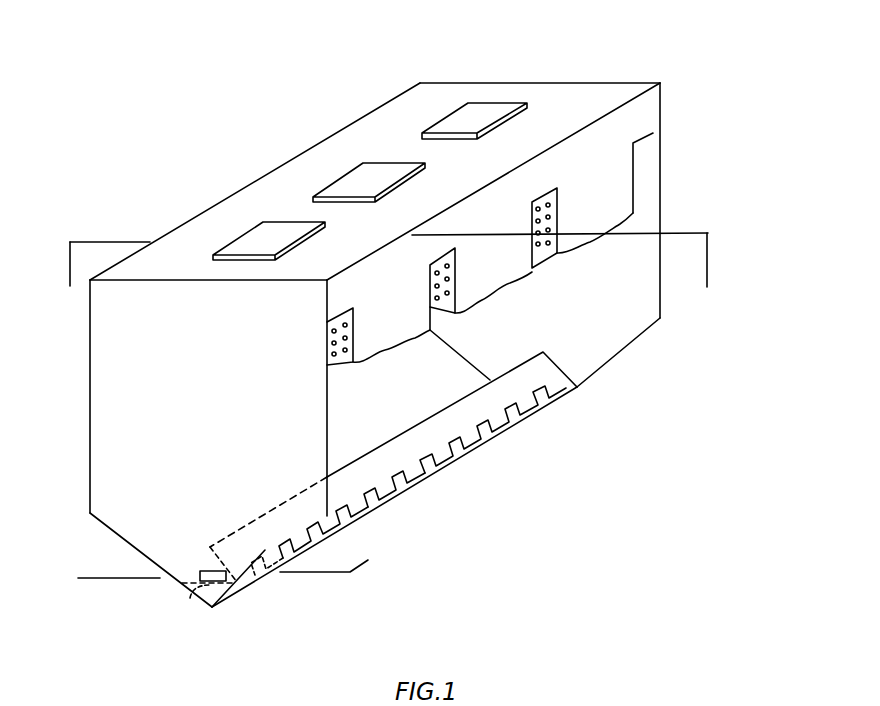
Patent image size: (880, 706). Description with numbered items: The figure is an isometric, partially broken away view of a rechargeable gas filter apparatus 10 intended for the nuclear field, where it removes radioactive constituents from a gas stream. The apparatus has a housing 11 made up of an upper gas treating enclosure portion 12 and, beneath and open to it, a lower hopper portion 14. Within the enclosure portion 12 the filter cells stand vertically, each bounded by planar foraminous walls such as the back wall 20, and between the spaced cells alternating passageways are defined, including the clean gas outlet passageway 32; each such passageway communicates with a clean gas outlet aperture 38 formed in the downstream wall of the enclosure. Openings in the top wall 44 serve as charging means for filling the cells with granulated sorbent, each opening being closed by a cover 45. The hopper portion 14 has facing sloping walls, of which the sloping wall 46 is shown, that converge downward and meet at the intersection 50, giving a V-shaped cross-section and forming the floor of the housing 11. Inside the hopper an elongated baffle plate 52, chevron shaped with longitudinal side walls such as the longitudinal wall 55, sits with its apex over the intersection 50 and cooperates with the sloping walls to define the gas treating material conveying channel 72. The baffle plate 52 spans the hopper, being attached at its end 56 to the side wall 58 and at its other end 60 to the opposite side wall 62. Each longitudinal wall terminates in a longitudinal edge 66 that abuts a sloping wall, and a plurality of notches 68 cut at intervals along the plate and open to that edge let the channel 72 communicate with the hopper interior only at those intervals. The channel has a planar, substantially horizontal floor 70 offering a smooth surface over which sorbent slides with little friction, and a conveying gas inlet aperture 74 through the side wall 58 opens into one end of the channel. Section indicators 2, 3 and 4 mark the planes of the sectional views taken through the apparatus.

The rechargeable gas filter apparatus 10 is at (255, 88).
The housing 11 is at (243, 133).
The upper gas treating enclosure portion 12 is at (86, 433).
The lower hopper portion 14 is at (145, 560).
The back wall 20 is at (347, 323).
The clean gas outlet passageway 32 is at (680, 153).
The clean gas outlet aperture 38 is at (363, 337).
The top wall 44 is at (437, 100).
The cover 45 is at (362, 175).
The sloping wall 46 is at (160, 590).
The intersection of the sloping walls 50 is at (253, 588).
The elongated baffle plate 52 is at (422, 416).
The longitudinal wall 55 is at (466, 418).
The end of the baffle plate 56 is at (197, 566).
The side wall 58 is at (140, 478).
The other end of the baffle plate 60 is at (580, 358).
The opposite side wall 62 is at (643, 212).
The longitudinal edge 66 is at (394, 496).
The notch 68 is at (468, 440).
The planar floor 70 is at (212, 607).
The gas treating material conveying channel 72 is at (389, 513).
The conveying gas inlet aperture 74 is at (213, 582).
The section line 2- 2 is at (113, 217).
The section line 3- 3 is at (386, 260).
The section line 4- 4 is at (110, 557).